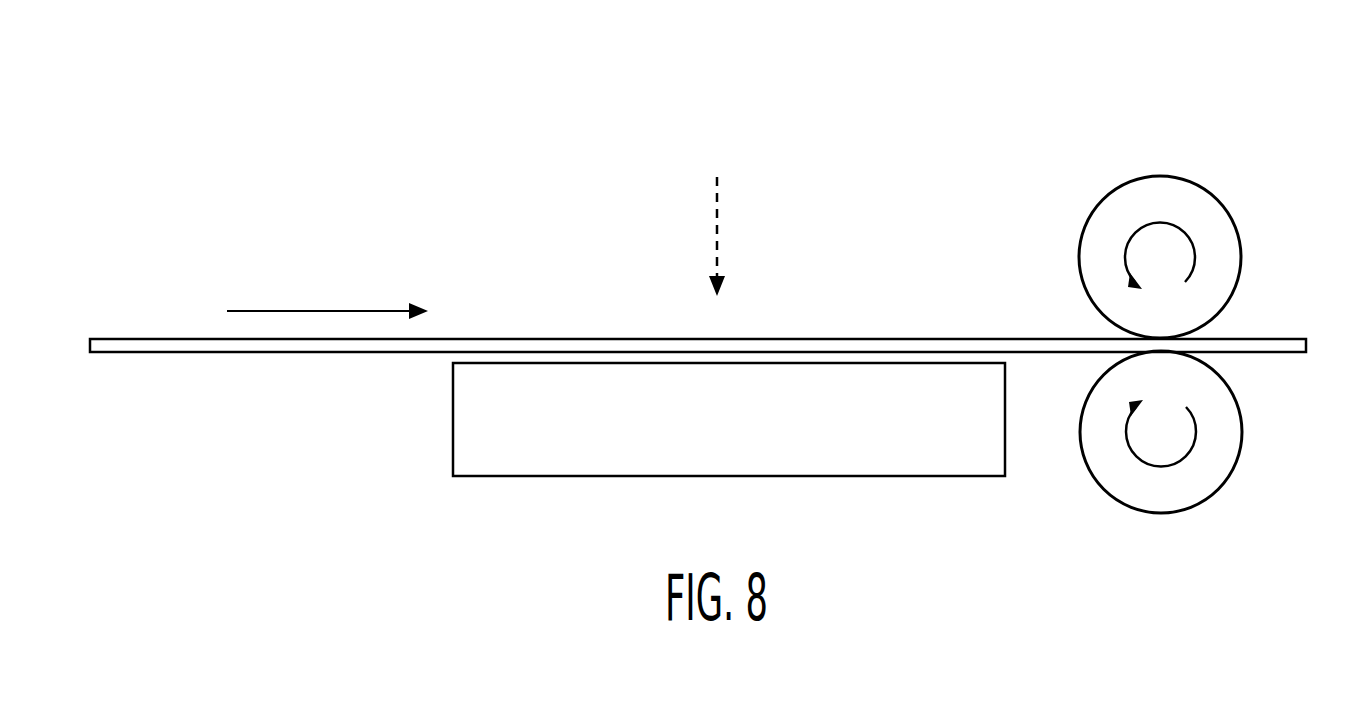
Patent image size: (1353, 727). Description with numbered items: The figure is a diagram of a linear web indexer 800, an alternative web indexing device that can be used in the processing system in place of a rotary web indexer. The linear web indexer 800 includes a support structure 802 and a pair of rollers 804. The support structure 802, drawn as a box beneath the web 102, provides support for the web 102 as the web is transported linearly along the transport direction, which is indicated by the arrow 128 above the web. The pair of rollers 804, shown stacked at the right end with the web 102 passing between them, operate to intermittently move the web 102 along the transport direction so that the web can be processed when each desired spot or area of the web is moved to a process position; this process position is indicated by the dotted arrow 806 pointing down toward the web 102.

The linear web indexer 800 is at (996, 93).
The web 102 is at (602, 337).
The arrow 128 is at (323, 315).
The support structure 802 is at (453, 418).
The rollers 804 is at (1232, 212).
The dotted arrow 806 is at (717, 235).